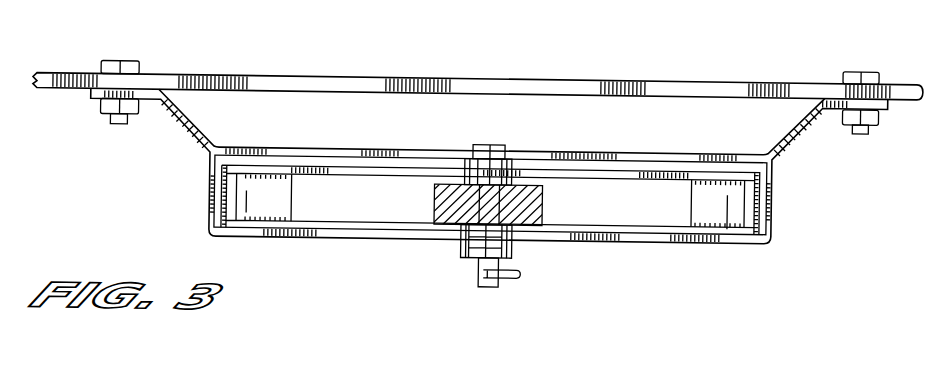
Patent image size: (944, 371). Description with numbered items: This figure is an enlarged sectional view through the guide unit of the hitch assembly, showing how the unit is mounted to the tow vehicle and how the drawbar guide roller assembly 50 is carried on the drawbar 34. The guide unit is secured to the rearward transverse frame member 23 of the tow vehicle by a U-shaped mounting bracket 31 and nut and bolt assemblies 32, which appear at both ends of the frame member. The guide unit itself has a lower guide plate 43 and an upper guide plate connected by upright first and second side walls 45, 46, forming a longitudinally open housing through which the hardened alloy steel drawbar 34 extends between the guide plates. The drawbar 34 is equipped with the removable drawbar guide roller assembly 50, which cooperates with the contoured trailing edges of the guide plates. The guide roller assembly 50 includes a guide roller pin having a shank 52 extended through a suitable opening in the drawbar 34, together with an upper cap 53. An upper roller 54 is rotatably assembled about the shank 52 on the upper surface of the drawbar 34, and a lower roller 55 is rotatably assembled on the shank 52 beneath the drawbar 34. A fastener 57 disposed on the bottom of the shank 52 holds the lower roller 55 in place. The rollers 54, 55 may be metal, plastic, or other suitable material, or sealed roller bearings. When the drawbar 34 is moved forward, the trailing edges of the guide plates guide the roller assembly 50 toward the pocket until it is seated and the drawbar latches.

The transverse frame member 23 is at (291, 76).
The nut and bolt assemblies 32 is at (857, 63).
The U-shaped mounting bracket 31 is at (192, 141).
The drawbar guide roller assembly 50 is at (488, 182).
The lower guide plate 43 is at (665, 237).
The first side wall 45 is at (773, 187).
The second side wall 46 is at (210, 202).
The upper cap 53 is at (487, 141).
The upper roller 54 is at (512, 154).
The drawbar 34 is at (543, 195).
The lower roller 55 is at (460, 246).
The shank 52 is at (490, 283).
The fastener 57 is at (522, 271).